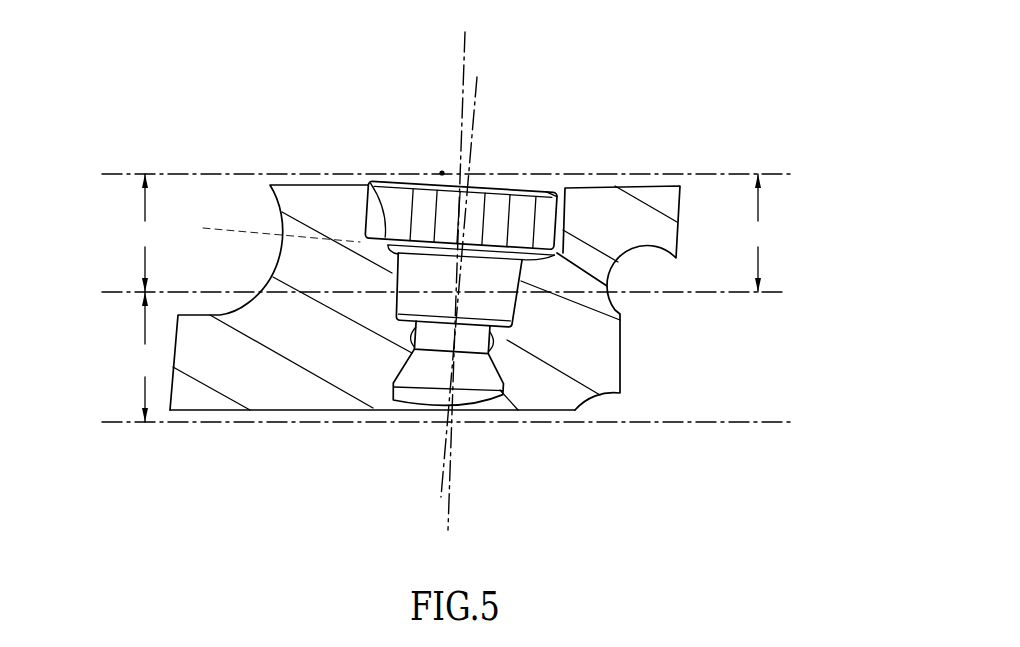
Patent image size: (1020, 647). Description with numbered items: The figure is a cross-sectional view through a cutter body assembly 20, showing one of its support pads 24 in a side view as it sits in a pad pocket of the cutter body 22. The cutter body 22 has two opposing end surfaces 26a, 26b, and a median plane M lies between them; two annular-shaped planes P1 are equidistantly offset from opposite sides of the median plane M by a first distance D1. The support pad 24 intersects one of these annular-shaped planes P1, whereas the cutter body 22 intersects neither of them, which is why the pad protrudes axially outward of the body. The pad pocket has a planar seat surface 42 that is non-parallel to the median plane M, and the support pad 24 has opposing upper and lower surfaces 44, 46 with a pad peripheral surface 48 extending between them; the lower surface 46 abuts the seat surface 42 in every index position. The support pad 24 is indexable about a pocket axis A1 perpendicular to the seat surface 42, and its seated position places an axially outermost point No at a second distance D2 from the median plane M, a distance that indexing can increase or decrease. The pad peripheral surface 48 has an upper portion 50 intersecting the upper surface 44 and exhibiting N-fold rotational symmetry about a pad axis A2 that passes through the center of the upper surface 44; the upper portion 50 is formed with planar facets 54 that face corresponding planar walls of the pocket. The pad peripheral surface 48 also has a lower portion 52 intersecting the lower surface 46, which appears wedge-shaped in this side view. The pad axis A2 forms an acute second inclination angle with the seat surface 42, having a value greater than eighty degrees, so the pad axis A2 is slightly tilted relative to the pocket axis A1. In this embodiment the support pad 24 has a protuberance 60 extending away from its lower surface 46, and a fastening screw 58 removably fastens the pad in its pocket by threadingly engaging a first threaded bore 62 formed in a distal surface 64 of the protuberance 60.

The cutter body assembly 20 is at (543, 120).
The cutter body 22 is at (230, 376).
The support pad 24 is at (427, 194).
The end surface 26a is at (653, 185).
The end surface 26b is at (272, 412).
The seat surface 42 is at (461, 215).
The upper surface 44 is at (508, 221).
The lower surface 46 is at (538, 257).
The pad peripheral surface 48 is at (470, 254).
The upper portion 50 is at (447, 217).
The lower portion 52 is at (534, 222).
The planar facet 54 is at (551, 194).
The fastening screw 58 is at (448, 378).
The protuberance 60 is at (458, 289).
The first threaded bore 62 is at (413, 337).
The distal surface 64 is at (491, 342).
The annular-shaped plane P1 is at (430, 297).
The median plane M is at (444, 293).
The first distance D1 is at (151, 298).
The second distance D2 is at (761, 233).
The pocket axis A1 is at (457, 285).
The pad axis A2 is at (456, 280).
The axially outermost point No is at (442, 172).